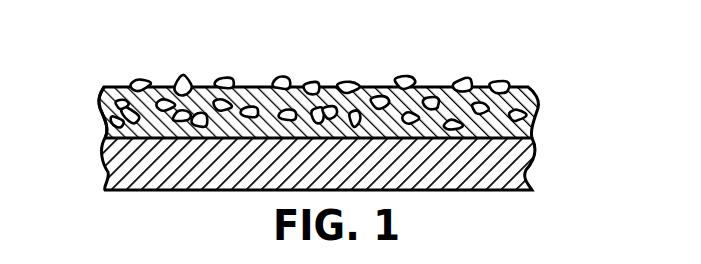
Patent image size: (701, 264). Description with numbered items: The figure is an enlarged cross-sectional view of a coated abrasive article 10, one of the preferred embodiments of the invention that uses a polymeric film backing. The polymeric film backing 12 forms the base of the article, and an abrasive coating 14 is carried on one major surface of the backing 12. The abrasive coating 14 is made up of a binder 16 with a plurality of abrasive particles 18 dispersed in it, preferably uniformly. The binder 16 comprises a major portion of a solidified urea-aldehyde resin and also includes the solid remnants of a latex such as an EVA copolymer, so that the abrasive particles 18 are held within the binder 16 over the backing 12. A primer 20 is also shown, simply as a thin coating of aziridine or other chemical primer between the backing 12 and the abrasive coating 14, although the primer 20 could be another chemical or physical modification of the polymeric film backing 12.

The coated abrasive article 10 is at (447, 42).
The polymeric film backing 12 is at (526, 169).
The abrasive coating 14 is at (550, 75).
The binder 16 is at (205, 92).
The abrasive particles 18 is at (340, 92).
The primer 20 is at (108, 126).